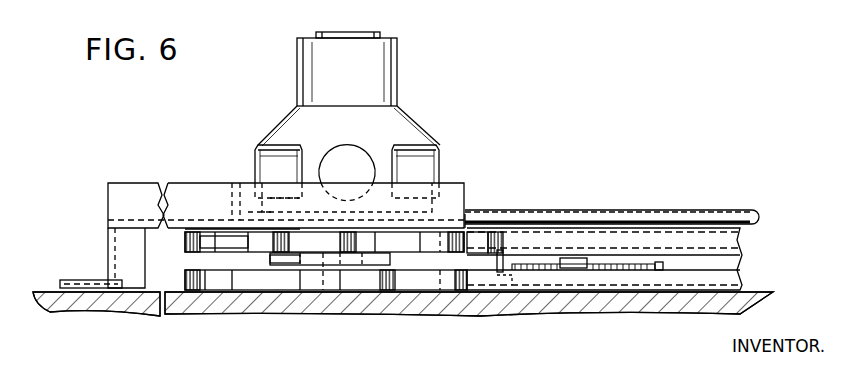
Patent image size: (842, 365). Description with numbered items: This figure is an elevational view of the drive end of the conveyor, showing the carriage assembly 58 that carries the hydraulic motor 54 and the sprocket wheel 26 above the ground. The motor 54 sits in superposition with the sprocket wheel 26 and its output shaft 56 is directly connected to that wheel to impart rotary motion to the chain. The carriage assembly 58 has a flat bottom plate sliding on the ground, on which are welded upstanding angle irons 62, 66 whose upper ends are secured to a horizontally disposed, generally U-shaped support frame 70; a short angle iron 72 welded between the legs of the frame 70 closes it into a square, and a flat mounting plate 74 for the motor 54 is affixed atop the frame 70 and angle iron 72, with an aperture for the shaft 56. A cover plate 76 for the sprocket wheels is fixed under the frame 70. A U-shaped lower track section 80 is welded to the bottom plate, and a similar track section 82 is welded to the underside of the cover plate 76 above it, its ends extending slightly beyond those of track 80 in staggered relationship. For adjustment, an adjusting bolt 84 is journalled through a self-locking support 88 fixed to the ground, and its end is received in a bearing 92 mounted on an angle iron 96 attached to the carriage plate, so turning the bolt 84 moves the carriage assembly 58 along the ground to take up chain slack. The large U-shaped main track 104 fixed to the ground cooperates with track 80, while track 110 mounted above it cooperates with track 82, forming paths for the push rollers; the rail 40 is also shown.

The sprocket wheel 26 is at (270, 258).
The rail 40 is at (705, 258).
The hydraulic motor 54 is at (397, 58).
The output shaft 56 is at (323, 275).
The carriage assembly 58 is at (468, 217).
The angle iron 62 is at (450, 258).
The angle iron 66 is at (108, 237).
The support frame 70 is at (200, 182).
The angle iron 72 is at (232, 218).
The mounting plate 74 is at (248, 212).
The cover plate 76 is at (197, 232).
The lower track section 80 is at (270, 282).
The track section 82 is at (222, 243).
The adjusting bolt 84 is at (633, 270).
The self-locking support 88 is at (573, 258).
The bearing 92 is at (518, 253).
The angle iron 96 is at (498, 270).
The main track 104 is at (420, 282).
The track 110 is at (495, 232).